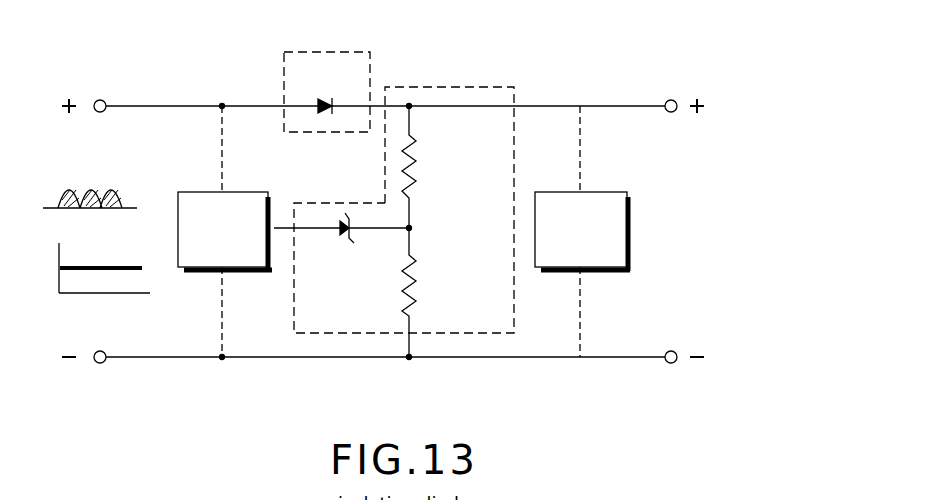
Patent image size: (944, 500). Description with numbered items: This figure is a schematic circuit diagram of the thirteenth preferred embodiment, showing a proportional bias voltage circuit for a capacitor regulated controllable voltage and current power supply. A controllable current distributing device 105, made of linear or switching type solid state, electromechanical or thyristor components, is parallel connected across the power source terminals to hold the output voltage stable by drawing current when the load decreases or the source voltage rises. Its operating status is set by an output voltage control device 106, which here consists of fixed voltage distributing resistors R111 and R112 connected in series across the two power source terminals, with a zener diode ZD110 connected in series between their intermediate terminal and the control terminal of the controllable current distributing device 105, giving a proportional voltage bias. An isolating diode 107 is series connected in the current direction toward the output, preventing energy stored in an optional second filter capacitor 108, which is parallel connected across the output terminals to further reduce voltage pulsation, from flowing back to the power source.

The controllable current distributing device 105 is at (195, 80).
The output voltage control device 106 is at (442, 83).
The isolating diode 107 is at (430, 26).
The second filter capacitor 108 is at (675, 168).
The voltage distributing resistor R111 is at (448, 167).
The voltage distributing resistor R112 is at (450, 292).
The zener diode ZD110 is at (354, 249).